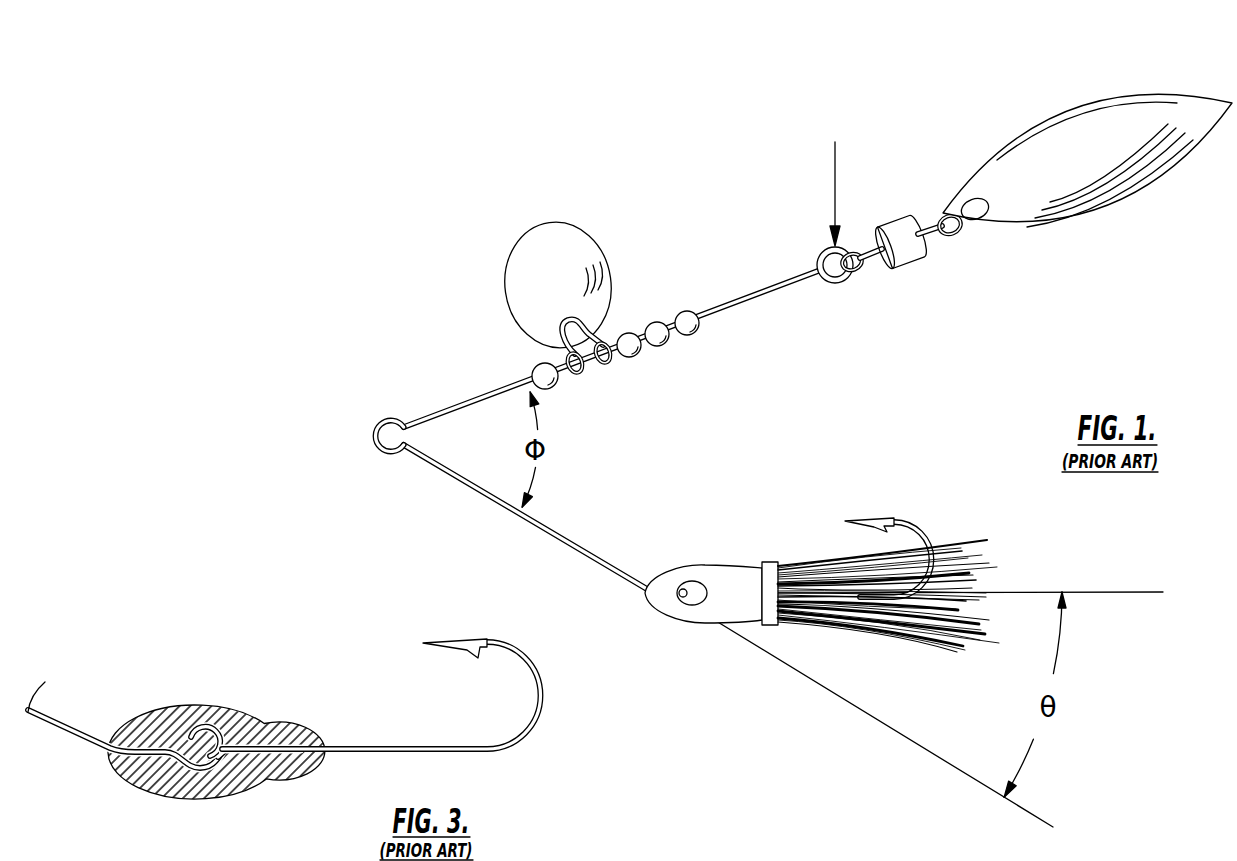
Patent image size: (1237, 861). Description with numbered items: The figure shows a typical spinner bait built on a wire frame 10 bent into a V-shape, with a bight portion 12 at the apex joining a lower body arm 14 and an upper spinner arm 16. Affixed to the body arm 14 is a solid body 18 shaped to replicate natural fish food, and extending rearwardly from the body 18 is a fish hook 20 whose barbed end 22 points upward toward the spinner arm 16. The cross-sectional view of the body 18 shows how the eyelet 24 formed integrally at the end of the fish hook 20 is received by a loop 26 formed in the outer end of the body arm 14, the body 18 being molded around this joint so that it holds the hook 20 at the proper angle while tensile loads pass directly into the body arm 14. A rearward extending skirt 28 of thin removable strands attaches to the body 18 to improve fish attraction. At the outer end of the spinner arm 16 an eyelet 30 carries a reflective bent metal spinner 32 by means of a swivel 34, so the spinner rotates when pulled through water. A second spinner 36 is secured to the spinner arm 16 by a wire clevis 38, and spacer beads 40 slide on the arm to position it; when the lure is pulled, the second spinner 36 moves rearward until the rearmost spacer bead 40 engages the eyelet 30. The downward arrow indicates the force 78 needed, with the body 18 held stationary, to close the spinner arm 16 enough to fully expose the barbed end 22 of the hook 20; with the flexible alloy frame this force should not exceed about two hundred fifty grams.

In FIG. 1, the wire frame 10 is at (463, 357).
In FIG. 1, the bight portion 12 is at (388, 418).
In FIG. 1, the body arm 14 is at (581, 548).
In FIG. 3, the body arm 14 is at (78, 723).
In FIG. 1, the spinner arm 16 is at (763, 291).
In FIG. 1, the body 18 is at (740, 578).
In FIG. 3, the body 18 is at (233, 720).
In FIG. 1, the fish hook 20 is at (925, 540).
In FIG. 3, the fish hook 20 is at (533, 722).
In FIG. 1, the barbed end 22 is at (870, 517).
In FIG. 3, the barbed end 22 is at (437, 642).
In FIG. 3, the eyelet 24 is at (220, 760).
In FIG. 3, the loop 26 is at (202, 722).
In FIG. 1, the skirt 28 is at (830, 630).
In FIG. 1, the eyelet 30 is at (833, 288).
In FIG. 1, the spinner 32 is at (1106, 207).
In FIG. 1, the swivel 34 is at (905, 252).
In FIG. 1, the second spinner 36 is at (535, 278).
In FIG. 1, the wire clevis 38 is at (600, 333).
In FIG. 1, the spacer beads 40 is at (550, 388).
In FIG. 1, the force 78 is at (832, 172).